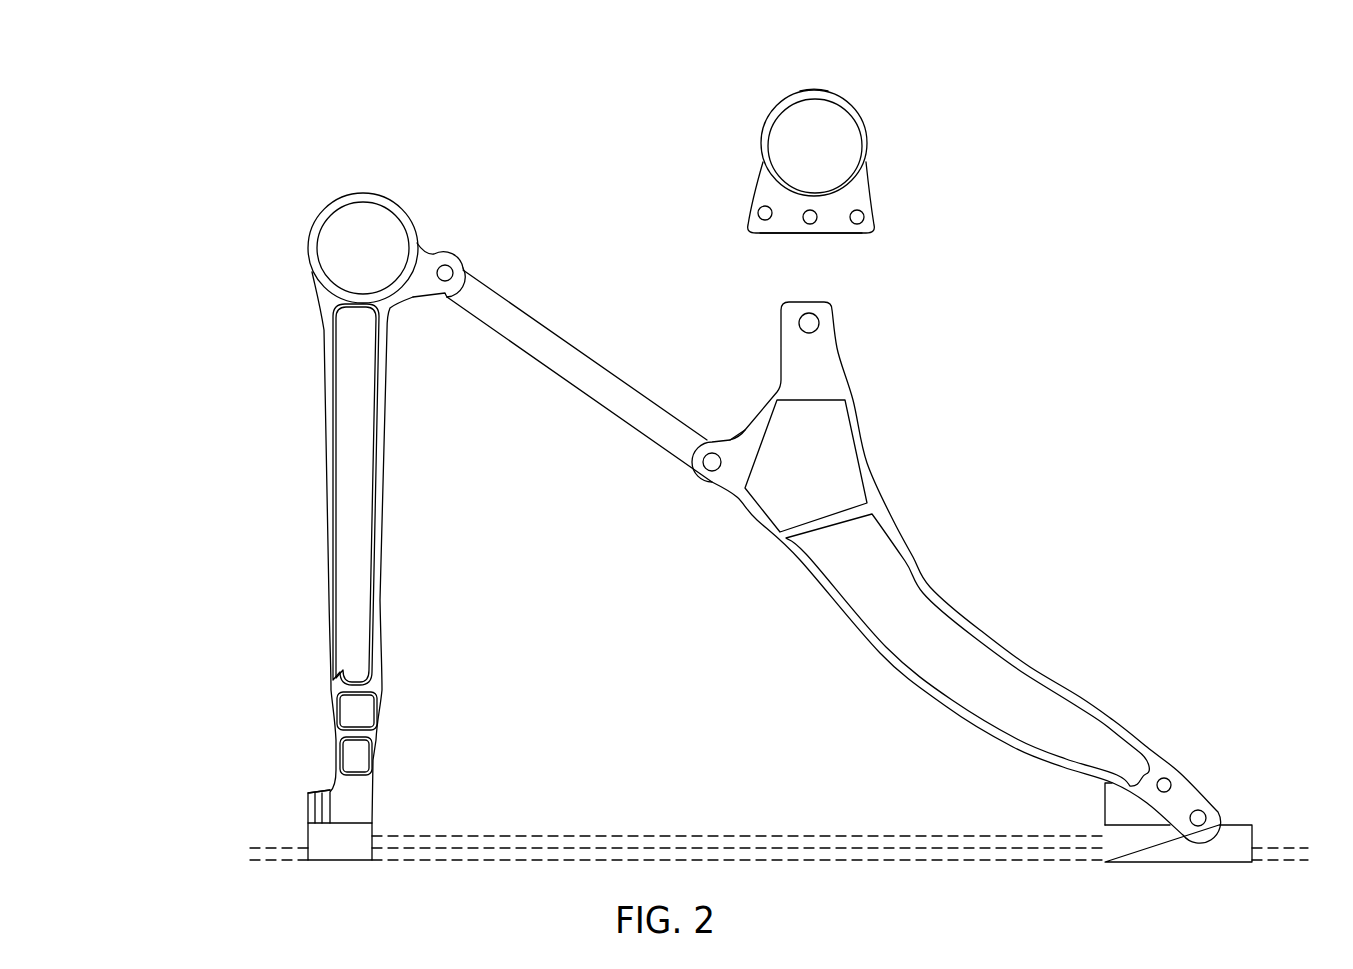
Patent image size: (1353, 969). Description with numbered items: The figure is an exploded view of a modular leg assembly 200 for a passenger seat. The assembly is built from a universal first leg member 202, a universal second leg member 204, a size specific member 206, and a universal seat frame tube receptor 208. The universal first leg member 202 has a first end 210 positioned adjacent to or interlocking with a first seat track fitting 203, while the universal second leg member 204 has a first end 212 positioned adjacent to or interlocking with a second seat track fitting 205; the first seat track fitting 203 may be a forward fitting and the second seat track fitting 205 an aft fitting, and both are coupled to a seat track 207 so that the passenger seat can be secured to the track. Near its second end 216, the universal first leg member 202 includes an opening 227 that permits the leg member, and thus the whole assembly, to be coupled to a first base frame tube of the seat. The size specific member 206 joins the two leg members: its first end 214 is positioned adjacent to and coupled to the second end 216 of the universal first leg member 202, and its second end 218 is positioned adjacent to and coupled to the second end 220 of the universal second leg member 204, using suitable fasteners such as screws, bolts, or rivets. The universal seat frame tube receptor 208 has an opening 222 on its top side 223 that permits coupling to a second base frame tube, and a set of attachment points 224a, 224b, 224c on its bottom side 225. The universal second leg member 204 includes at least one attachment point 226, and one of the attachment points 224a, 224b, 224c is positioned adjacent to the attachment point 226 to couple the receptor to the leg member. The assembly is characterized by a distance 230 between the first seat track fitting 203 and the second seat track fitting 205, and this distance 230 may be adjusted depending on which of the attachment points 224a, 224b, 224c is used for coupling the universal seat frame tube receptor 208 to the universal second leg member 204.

The modular leg assembly 200 is at (226, 129).
The universal first leg member 202 is at (341, 476).
The first seat track fitting 203 is at (358, 848).
The universal second leg member 204 is at (1022, 700).
The second seat track fitting 205 is at (1178, 845).
The size specific member 206 is at (513, 305).
The seat track 207 is at (572, 858).
The universal seat frame tube receptor 208 is at (862, 191).
The first end of the universal first leg member 210 is at (308, 797).
The first end of the universal second leg member 212 is at (1112, 812).
The first end of the size specific member 214 is at (472, 295).
The second end of the universal first leg member 216 is at (437, 254).
The second end of the size specific member 218 is at (683, 457).
The second end of the universal second leg member 220 is at (733, 438).
The opening 222 is at (848, 140).
The top side 223 is at (818, 90).
The attachment point 224a is at (762, 208).
The attachment point 224b is at (812, 222).
The attachment point 224c is at (858, 222).
The bottom side 225 is at (785, 224).
The attachment point 226 is at (790, 313).
The opening 227 is at (353, 236).
The distance 230 is at (576, 836).